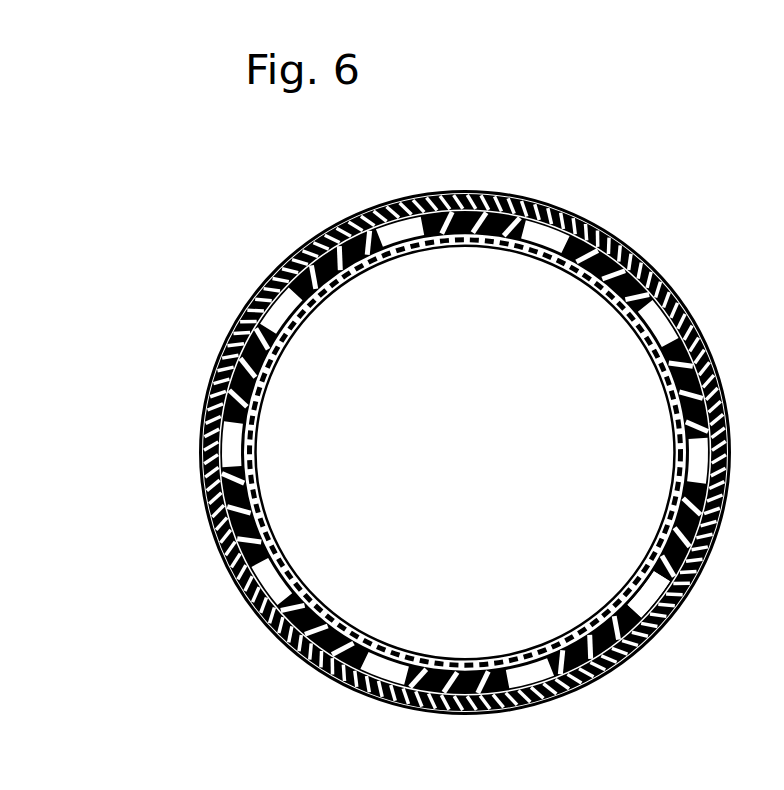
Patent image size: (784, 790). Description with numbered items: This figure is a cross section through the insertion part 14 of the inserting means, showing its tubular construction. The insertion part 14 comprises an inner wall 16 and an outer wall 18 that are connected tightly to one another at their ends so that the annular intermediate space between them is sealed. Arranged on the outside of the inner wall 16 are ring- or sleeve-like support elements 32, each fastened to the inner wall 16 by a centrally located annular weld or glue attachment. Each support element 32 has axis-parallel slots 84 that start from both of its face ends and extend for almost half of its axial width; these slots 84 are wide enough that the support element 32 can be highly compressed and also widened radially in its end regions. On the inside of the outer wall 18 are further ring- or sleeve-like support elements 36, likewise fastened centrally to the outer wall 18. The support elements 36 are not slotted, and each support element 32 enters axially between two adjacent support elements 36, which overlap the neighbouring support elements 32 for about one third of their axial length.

The insertion part 14 is at (465, 411).
The inner wall 16 is at (465, 453).
The outer wall 18 is at (465, 452).
The support element 32 is at (465, 452).
The support element 36 is at (465, 452).
The slot 84 is at (648, 594).